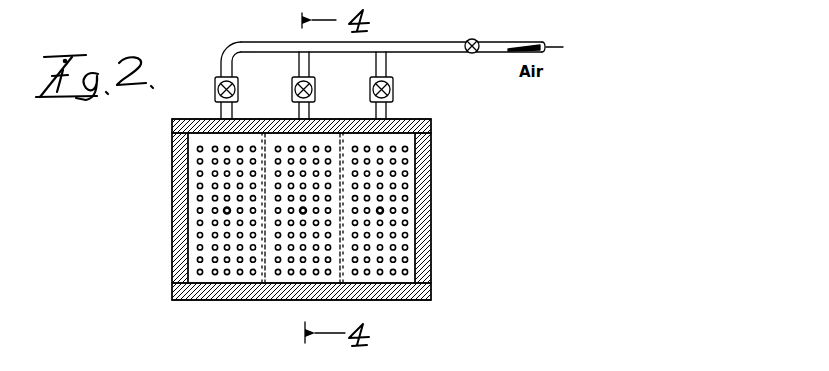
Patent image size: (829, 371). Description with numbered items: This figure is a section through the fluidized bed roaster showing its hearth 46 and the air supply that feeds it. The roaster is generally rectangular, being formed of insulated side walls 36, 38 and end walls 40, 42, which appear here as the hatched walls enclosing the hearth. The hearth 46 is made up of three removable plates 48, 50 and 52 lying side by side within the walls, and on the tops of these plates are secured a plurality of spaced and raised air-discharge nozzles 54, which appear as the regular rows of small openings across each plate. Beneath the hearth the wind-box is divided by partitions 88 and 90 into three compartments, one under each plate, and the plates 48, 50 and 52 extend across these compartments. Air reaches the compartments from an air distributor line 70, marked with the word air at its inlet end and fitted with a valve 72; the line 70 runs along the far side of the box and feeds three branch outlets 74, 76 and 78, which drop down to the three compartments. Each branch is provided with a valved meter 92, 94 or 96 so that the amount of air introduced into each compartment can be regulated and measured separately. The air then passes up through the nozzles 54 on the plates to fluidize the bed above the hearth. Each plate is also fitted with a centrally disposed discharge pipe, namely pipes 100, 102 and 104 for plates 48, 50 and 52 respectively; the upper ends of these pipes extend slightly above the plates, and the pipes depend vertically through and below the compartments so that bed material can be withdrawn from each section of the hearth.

The side wall 36 is at (230, 289).
The side wall 38 is at (203, 118).
The end wall 40 is at (426, 251).
The end wall 42 is at (175, 240).
The hearth 46 is at (404, 136).
The removable plate 48 is at (390, 278).
The removable plate 50 is at (283, 279).
The removable plate 52 is at (210, 279).
The air-discharge nozzles 54 is at (212, 172).
The air distributor line 70 is at (506, 41).
The valve 72 is at (472, 38).
The branch outlet 74 is at (387, 61).
The branch outlet 76 is at (310, 72).
The branch outlet 78 is at (222, 70).
The partition 88 is at (362, 118).
The partition 90 is at (284, 118).
The valved meter 92 is at (394, 90).
The valved meter 94 is at (316, 91).
The valved meter 96 is at (239, 92).
The discharge pipe 100 is at (384, 209).
The discharge pipe 102 is at (304, 214).
The discharge pipe 104 is at (224, 209).